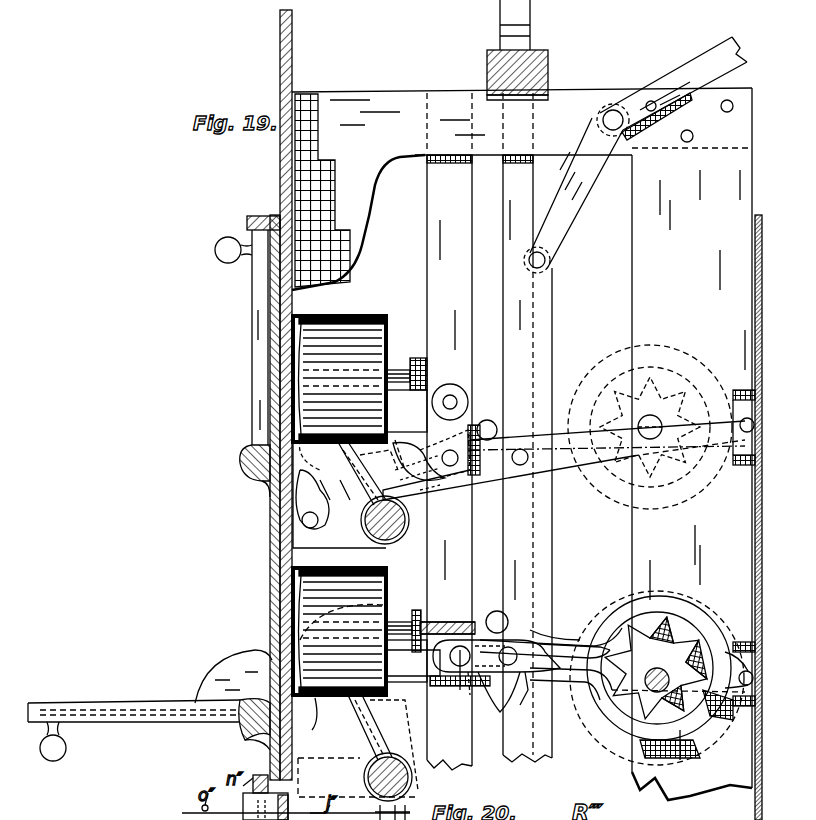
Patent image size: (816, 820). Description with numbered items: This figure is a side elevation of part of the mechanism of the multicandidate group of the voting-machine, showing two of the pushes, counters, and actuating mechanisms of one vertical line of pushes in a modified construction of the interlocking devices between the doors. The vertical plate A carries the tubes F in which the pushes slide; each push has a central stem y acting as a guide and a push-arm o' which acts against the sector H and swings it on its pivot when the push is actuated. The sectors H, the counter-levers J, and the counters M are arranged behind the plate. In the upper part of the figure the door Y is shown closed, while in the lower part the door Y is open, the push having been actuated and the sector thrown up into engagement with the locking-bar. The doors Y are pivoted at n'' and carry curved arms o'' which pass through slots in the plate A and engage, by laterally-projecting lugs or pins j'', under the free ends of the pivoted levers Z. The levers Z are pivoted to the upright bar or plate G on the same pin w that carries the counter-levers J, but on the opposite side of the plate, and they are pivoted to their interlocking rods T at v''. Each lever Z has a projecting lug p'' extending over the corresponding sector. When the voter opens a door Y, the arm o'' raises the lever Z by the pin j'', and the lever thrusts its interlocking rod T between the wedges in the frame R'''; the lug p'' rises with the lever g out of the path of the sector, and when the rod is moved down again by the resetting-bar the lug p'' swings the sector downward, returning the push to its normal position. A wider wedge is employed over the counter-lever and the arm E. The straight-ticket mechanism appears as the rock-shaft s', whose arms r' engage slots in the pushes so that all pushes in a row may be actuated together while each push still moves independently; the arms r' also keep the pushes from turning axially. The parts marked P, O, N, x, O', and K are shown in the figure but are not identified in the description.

The vertical plate A is at (292, 52).
The arm E is at (522, 189).
The upright bar or plate G is at (692, 444).
The strip P is at (762, 298).
The frame R''' is at (534, 50).
The interlocking rod T is at (518, 455).
The connecting rod O is at (537, 515).
The bell-crank lever N is at (574, 208).
The door Y is at (105, 702).
The door pivot n'' is at (250, 600).
The tube F is at (362, 316).
The central stem y is at (398, 370).
The armature x is at (410, 505).
The bracket O' is at (406, 411).
The push-arm o' is at (413, 661).
The sector H is at (456, 582).
The projecting lug p'' is at (492, 514).
The pivoted lever Z is at (564, 572).
The lever pivot v'' is at (519, 586).
The counter M is at (612, 343).
The star wheel K is at (655, 667).
The lever g is at (659, 689).
The pin w is at (752, 421).
The counter-lever J is at (575, 650).
The curved arm o'' is at (262, 571).
The arm r' is at (374, 615).
The rock-shaft s' is at (394, 649).
The lug or pin j'' is at (356, 700).